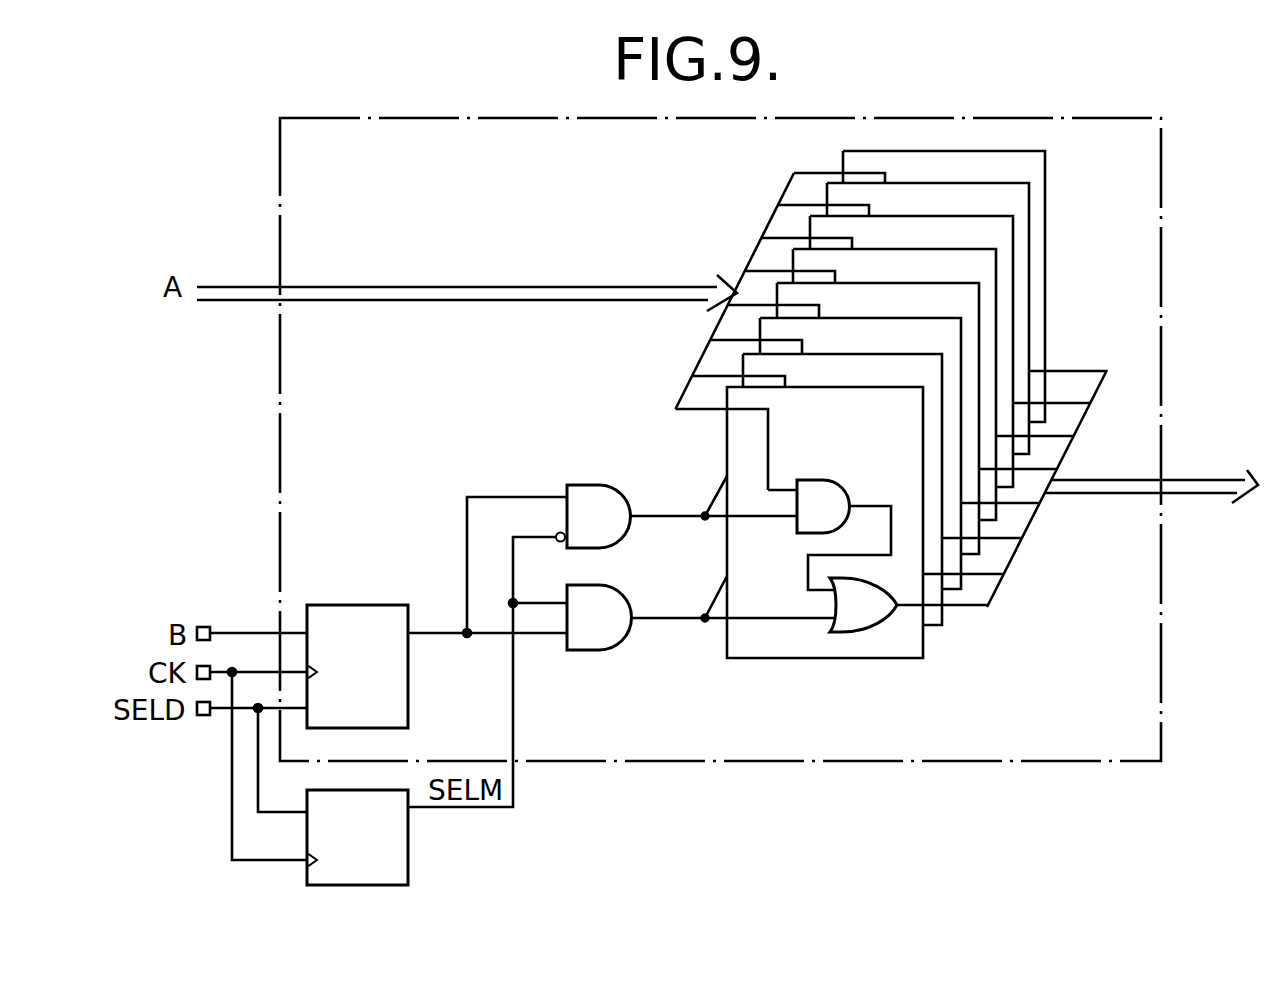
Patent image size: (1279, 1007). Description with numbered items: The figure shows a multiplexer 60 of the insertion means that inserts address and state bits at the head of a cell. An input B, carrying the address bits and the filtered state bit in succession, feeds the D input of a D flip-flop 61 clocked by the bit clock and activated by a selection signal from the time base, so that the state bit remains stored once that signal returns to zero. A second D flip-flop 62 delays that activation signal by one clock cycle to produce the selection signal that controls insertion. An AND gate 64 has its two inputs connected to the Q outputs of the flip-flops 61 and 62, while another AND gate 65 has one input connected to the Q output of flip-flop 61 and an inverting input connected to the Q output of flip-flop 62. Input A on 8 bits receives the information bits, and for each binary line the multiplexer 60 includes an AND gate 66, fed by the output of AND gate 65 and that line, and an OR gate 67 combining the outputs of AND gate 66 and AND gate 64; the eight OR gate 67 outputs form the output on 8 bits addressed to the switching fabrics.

The 8 bits 8 is at (1220, 472).
The multiplexer 60 is at (1161, 632).
The D flip-flop 61 is at (410, 695).
The D flip-flop 62 is at (410, 857).
The AND gate 64 is at (618, 637).
The AND gate 65 is at (625, 465).
The AND gate 66 is at (847, 490).
The OR gate 67 is at (863, 633).